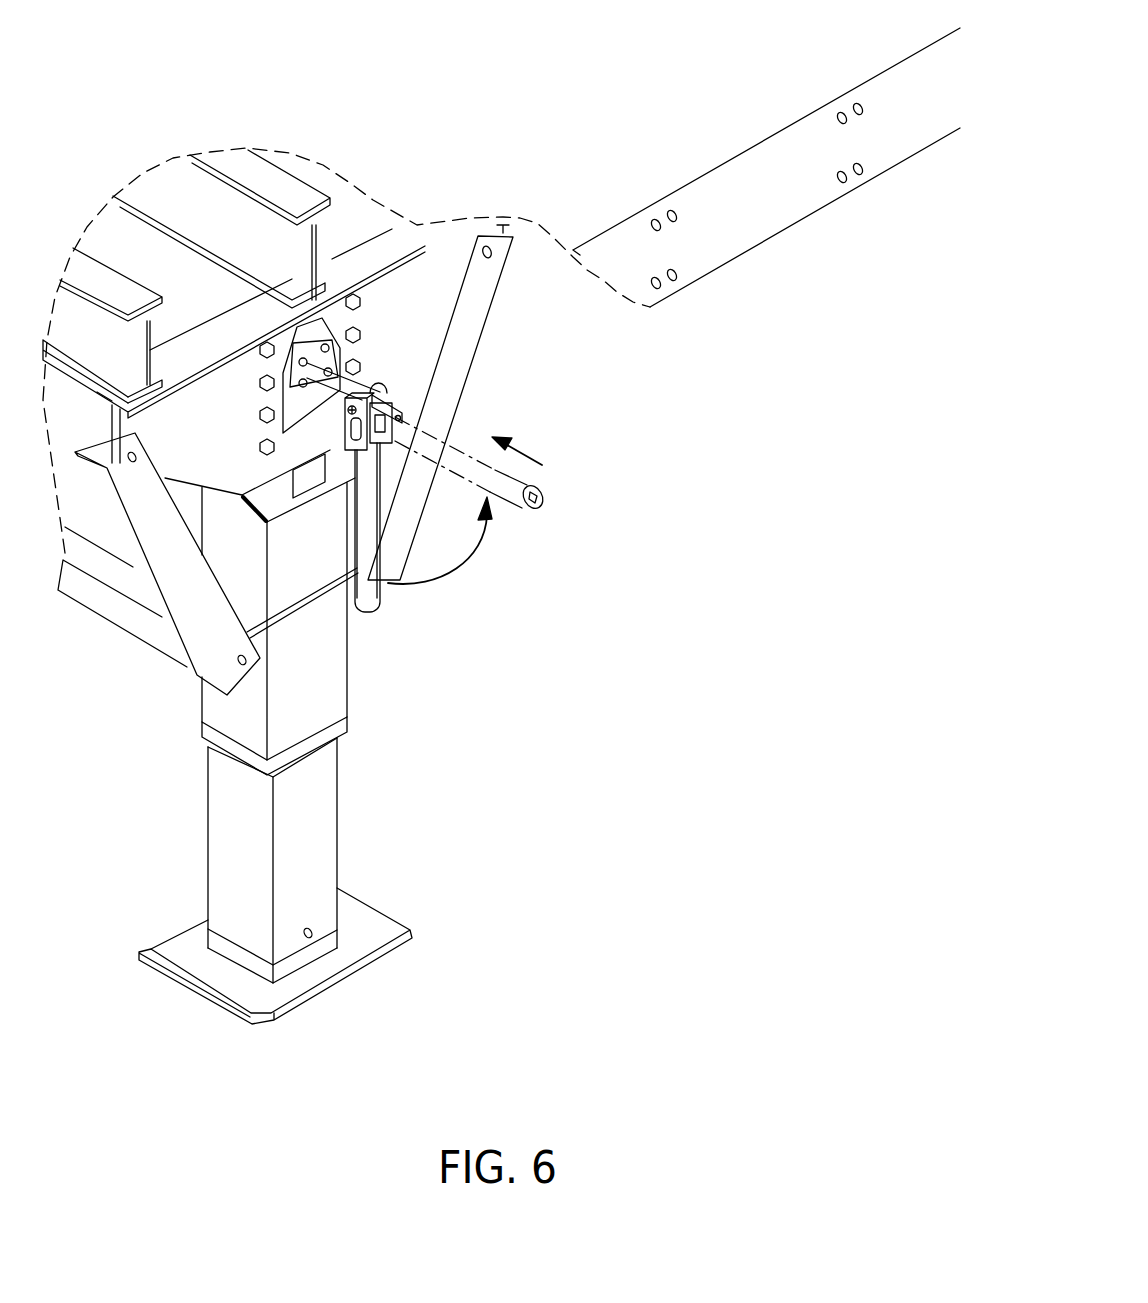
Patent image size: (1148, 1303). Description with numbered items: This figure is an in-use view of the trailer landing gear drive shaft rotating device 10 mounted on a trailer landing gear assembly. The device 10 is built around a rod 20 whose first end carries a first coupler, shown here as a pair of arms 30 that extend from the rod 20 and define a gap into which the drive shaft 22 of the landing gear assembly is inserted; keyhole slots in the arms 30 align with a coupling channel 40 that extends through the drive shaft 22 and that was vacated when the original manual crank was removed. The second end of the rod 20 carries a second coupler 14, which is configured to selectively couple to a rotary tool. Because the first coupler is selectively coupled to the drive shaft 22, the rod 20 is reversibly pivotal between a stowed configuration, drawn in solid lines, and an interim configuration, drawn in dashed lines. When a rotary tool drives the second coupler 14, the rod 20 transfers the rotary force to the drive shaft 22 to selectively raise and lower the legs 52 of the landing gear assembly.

The trailer landing gear drive shaft rotating device 10 is at (465, 128).
The second coupler 14 is at (543, 503).
The rod 20 is at (388, 412).
The drive shaft 22 is at (366, 374).
The pair of arms 30 is at (383, 447).
The coupling channel 40 is at (388, 415).
The legs 52 is at (315, 825).